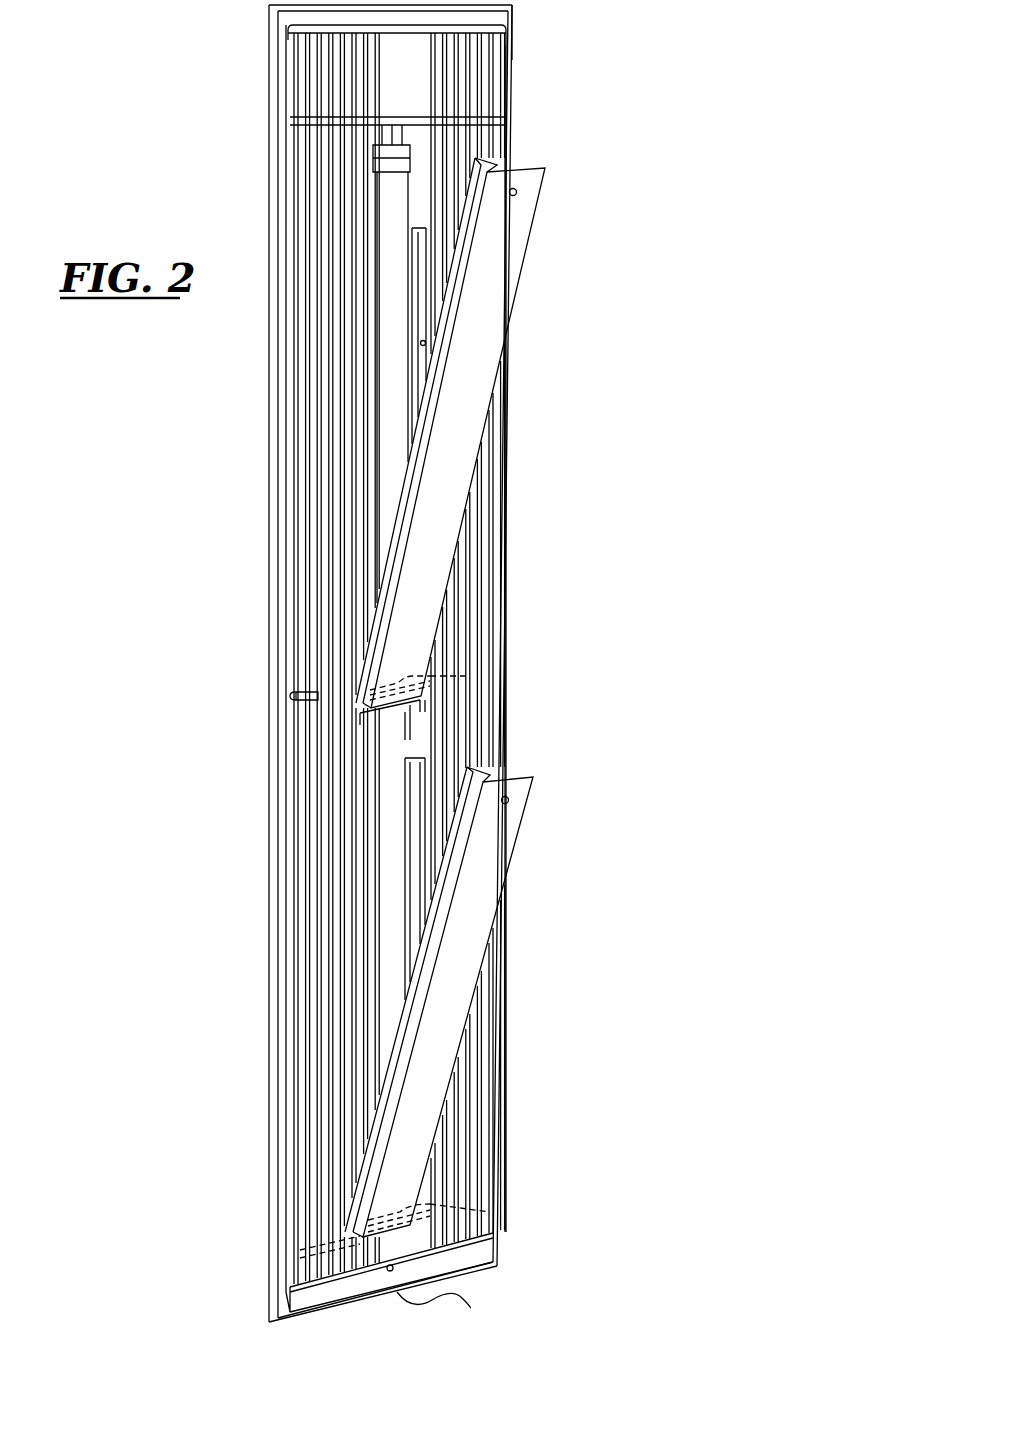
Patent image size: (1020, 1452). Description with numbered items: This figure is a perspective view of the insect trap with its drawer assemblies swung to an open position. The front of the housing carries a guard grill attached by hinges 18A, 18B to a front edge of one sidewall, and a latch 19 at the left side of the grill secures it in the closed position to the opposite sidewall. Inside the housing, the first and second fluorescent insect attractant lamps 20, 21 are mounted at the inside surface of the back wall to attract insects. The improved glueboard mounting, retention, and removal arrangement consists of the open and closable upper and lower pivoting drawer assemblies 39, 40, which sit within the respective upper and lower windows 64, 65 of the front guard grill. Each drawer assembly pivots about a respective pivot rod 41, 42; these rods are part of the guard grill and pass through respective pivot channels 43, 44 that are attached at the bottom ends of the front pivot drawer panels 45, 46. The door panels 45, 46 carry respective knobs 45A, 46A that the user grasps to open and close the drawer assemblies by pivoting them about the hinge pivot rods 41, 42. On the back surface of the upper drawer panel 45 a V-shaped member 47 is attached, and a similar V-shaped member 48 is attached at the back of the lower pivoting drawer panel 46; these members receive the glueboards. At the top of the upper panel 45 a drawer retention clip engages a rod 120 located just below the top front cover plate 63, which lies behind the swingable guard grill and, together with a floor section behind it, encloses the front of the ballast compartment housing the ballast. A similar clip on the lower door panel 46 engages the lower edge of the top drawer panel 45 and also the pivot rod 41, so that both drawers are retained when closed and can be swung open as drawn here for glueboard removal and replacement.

The hinge 18A is at (508, 48).
The hinge 18B is at (495, 1195).
The latch 19 is at (290, 696).
The first fluorescent insect attractant lamp 20 is at (328, 182).
The second fluorescent insect attractant lamp 21 is at (390, 185).
The upper pivoting drawer assembly 39 is at (402, 425).
The lower pivoting drawer assembly 40 is at (494, 982).
The pivot rod 41 is at (365, 705).
The pivot rod 42 is at (330, 1265).
The pivot channel 43 is at (435, 683).
The lower pivot channel 44 is at (493, 1243).
The front pivot drawer panel 45 is at (505, 222).
The knob 45A is at (516, 194).
The lower pivoting drawer panel 46 is at (500, 840).
The knob 46A is at (509, 800).
The V-shaped member 47 is at (503, 161).
The V-shaped member 48 is at (505, 773).
The top front cover plate 63 is at (400, 72).
The upper window 64 is at (390, 455).
The lower window 65 is at (390, 795).
The rod 120 is at (398, 120).